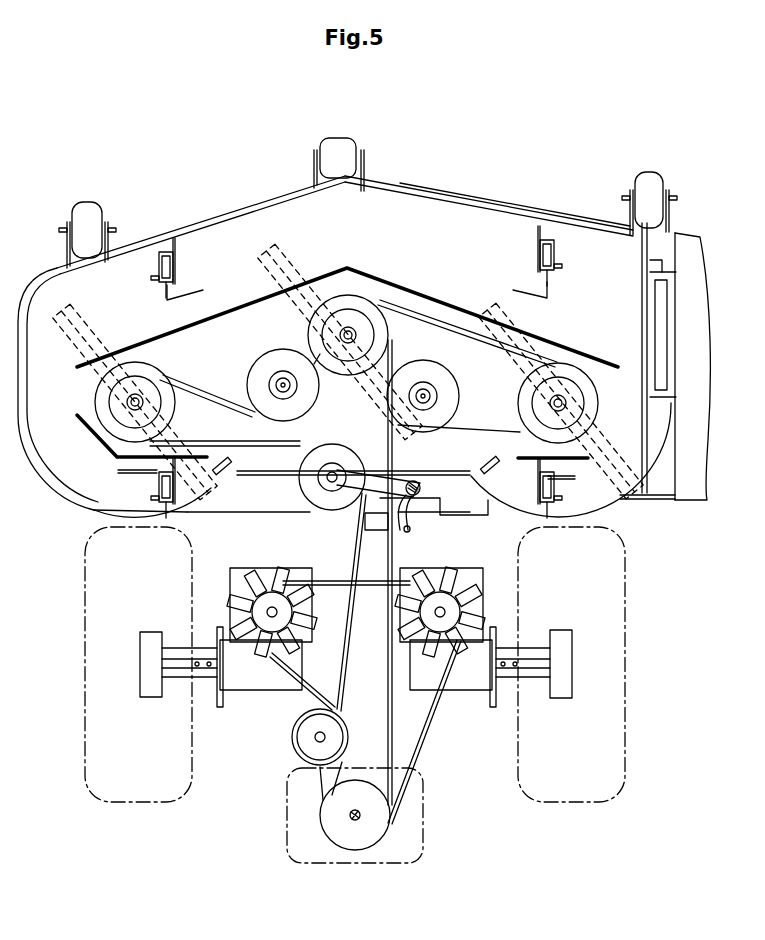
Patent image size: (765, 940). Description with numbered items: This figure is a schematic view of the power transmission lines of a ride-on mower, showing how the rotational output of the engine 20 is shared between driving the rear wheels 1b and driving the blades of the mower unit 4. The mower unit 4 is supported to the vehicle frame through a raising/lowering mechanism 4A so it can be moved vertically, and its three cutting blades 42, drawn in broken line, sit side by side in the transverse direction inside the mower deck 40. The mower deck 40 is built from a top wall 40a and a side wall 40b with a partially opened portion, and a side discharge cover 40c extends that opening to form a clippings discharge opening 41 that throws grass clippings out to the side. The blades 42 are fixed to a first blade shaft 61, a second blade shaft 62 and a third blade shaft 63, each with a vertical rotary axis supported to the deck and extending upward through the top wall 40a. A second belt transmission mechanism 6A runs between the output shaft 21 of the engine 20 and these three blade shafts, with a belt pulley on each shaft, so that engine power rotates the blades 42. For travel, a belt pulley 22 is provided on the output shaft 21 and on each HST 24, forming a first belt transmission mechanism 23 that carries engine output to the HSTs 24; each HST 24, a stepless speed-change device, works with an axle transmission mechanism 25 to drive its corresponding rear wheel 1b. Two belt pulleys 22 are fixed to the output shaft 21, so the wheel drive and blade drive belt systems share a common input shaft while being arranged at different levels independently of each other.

The mower unit 4 is at (208, 183).
The mower deck 40 is at (418, 184).
The top wall 40a is at (485, 233).
The side wall 40b is at (608, 508).
The side discharge cover 40c is at (692, 238).
The clippings discharge opening 41 is at (714, 360).
The raising/lowering mechanism 4A is at (151, 262).
The cutting blades 42 is at (77, 316).
The first blade shaft 61 is at (131, 401).
The second blade shaft 62 is at (353, 330).
The third blade shaft 63 is at (560, 398).
The second belt transmission mechanism 6A is at (215, 385).
The first belt transmission mechanism 23 is at (430, 743).
The HST (hydrostatic transmission) 24 is at (263, 568).
The axle transmission mechanism 25 is at (247, 688).
The rear wheels 1b is at (82, 675).
The engine 20 is at (372, 866).
The output shaft 21 is at (352, 816).
The belt pulley 22 is at (345, 843).